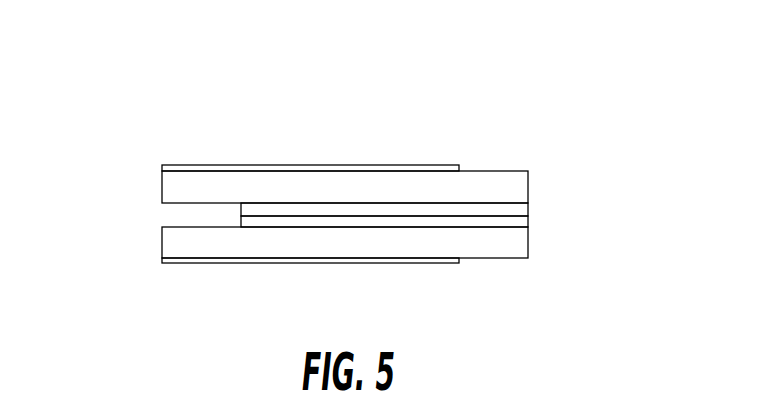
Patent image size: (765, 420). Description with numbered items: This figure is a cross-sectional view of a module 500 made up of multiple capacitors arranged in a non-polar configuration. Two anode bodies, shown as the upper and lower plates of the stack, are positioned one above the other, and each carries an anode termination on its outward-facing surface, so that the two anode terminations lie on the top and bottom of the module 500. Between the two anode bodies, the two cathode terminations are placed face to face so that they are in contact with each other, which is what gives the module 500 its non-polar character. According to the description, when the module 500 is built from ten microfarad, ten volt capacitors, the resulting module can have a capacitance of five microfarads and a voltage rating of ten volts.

The module 500 is at (508, 121).